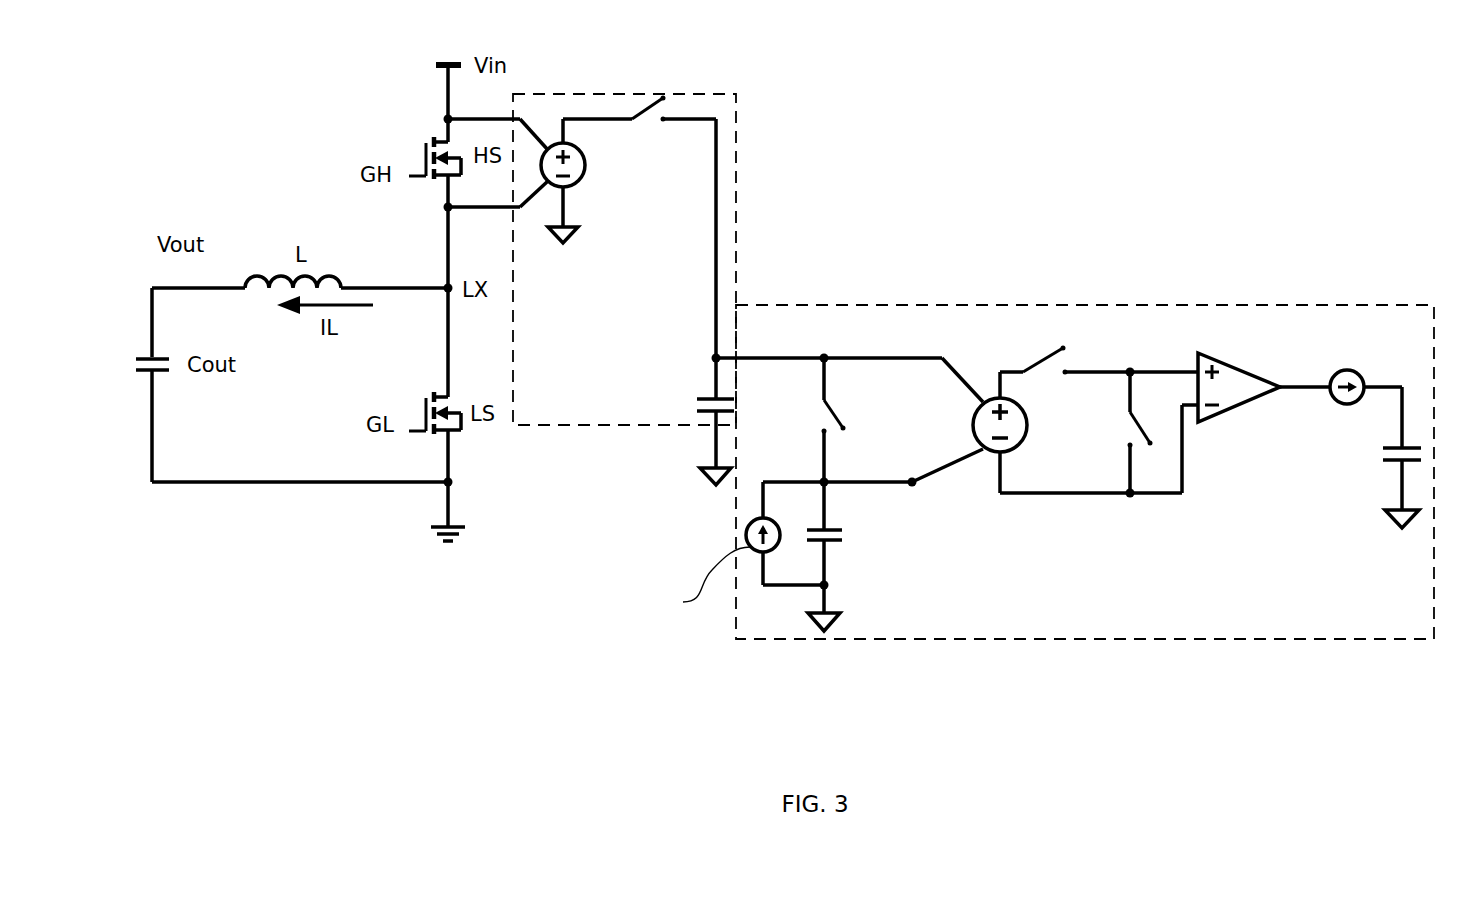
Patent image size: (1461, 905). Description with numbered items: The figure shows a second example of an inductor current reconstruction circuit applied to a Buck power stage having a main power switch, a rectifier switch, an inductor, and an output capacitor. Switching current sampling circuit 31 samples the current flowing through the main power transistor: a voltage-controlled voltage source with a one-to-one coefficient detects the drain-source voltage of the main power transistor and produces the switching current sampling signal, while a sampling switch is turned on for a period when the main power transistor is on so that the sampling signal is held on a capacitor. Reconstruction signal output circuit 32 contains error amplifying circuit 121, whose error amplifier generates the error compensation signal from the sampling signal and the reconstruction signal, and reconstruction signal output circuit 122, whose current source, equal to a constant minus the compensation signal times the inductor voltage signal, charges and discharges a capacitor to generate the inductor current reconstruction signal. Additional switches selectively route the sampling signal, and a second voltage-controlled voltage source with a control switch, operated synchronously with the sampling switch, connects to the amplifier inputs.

The switching current sampling circuit 31 is at (612, 425).
The reconstruction signal output circuit 32 is at (998, 499).
The error amplifying circuit 121 is at (1245, 426).
The reconstruction signal output circuit 122 is at (877, 561).